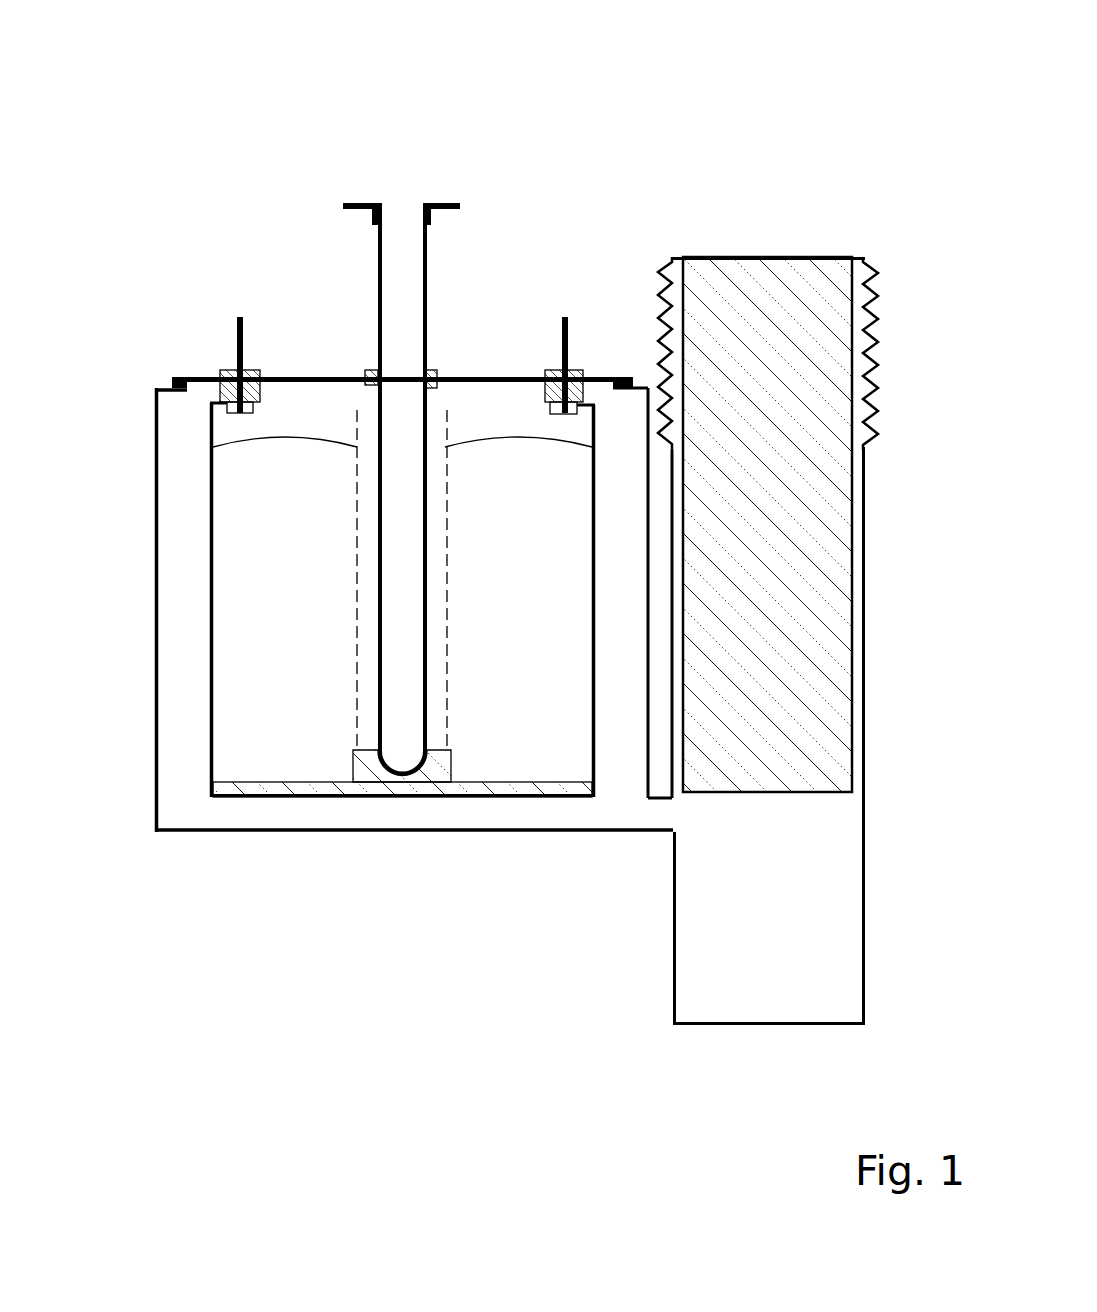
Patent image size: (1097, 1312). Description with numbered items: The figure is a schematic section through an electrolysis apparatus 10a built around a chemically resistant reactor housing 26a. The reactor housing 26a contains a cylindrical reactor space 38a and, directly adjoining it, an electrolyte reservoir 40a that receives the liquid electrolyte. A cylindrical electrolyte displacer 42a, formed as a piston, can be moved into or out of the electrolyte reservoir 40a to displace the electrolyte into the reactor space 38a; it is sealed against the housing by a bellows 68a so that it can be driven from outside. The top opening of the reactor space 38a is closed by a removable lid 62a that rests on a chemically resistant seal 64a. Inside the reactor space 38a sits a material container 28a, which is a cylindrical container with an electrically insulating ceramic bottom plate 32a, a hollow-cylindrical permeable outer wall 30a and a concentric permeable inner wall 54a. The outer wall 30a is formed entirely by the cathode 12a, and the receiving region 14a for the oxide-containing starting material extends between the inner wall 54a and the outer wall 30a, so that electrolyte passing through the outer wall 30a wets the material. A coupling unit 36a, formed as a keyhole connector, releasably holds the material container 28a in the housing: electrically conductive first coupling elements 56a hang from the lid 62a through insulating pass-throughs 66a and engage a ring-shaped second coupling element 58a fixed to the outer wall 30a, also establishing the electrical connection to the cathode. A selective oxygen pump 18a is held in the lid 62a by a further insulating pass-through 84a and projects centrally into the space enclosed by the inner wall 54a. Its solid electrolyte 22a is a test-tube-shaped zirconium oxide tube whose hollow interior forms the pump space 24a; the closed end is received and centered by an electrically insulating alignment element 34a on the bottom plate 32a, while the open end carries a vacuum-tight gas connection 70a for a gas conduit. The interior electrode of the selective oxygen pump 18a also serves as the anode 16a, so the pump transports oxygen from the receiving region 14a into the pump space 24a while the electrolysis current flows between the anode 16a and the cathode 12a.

The electrolysis apparatus 10a is at (741, 138).
The cathode 12a is at (210, 488).
The receiving region 14a is at (553, 764).
The anode 16a is at (372, 641).
The selective oxygen pump 18a is at (372, 586).
The solid electrolyte 22a is at (378, 563).
The pump space 24a is at (402, 230).
The reactor housing 26a is at (155, 770).
The material container 28a is at (274, 812).
The outer wall 30a is at (200, 745).
The bottom plate 32a is at (317, 790).
The alignment element 34a is at (430, 768).
The coupling unit 36a is at (216, 365).
The reactor space 38a is at (620, 808).
The electrolyte reservoir 40a is at (773, 972).
The electrolyte displacer 42a is at (805, 652).
The inner wall 54a is at (365, 418).
The first coupling element 56a is at (236, 328).
The second coupling element 58a is at (210, 398).
The lid 62a is at (300, 377).
The seal 64a is at (172, 383).
The pass-through 66a is at (256, 370).
The bellows 68a is at (878, 295).
The gas connection 70a is at (448, 203).
The pass-through 84a is at (430, 372).